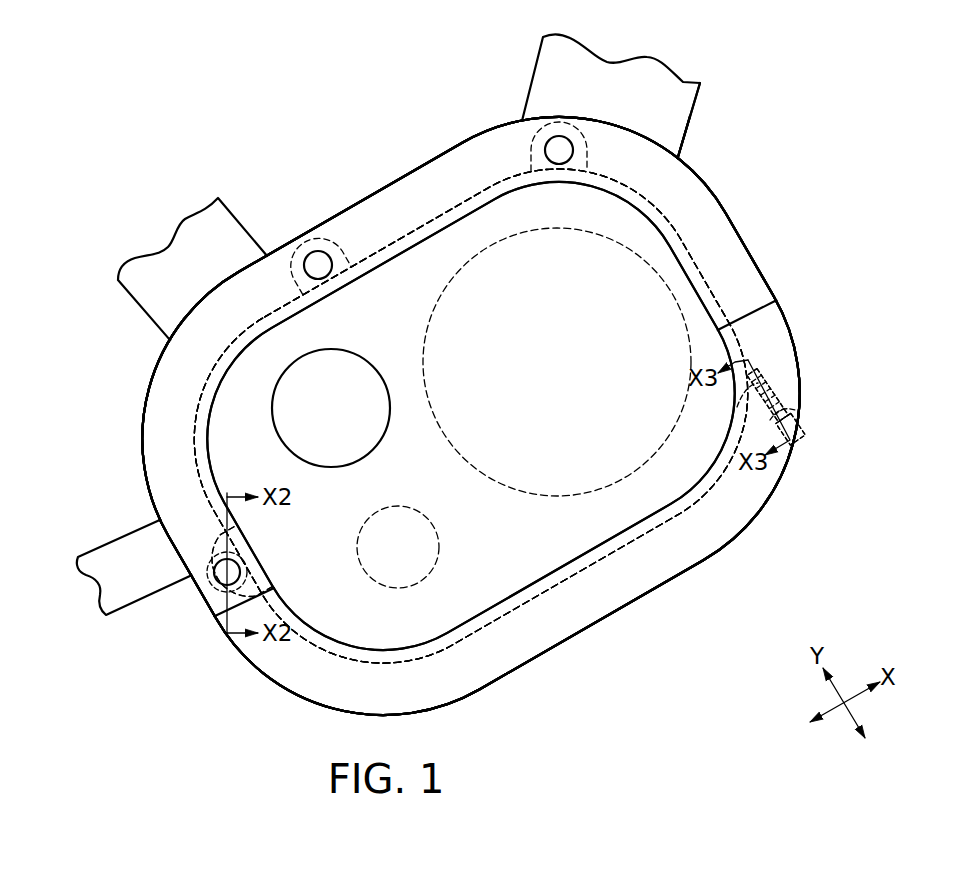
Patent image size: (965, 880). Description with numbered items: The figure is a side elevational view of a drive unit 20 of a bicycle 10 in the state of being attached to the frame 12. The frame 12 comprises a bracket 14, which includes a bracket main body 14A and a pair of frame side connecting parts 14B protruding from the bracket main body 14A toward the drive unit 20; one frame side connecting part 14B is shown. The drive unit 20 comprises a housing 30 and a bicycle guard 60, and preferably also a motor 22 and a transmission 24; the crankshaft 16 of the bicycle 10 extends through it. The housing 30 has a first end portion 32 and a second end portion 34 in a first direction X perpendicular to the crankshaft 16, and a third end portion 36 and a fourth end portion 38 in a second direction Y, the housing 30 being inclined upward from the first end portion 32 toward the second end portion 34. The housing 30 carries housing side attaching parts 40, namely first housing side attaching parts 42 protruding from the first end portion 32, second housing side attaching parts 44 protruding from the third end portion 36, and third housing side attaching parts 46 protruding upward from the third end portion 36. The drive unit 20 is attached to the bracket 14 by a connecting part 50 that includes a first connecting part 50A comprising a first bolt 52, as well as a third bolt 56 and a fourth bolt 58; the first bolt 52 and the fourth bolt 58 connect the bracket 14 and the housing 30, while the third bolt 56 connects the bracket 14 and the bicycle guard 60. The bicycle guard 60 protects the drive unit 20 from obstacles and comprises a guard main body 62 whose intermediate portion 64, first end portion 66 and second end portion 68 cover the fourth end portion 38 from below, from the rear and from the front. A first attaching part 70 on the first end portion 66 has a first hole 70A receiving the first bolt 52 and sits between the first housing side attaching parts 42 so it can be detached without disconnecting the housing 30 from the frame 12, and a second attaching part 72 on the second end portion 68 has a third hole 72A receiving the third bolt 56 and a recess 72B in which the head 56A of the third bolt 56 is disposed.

The bicycle 10 is at (890, 68).
The frame 12 is at (702, 98).
The bracket 14 is at (702, 163).
The bracket main body 14A is at (668, 145).
The frame side connecting part 14B is at (692, 190).
The crankshaft 16 is at (346, 460).
The drive unit 20 is at (178, 392).
The motor 22 is at (468, 440).
The transmission 24 is at (397, 578).
The housing 30 is at (185, 423).
The first end portion 32 is at (223, 494).
The second end portion 34 is at (668, 247).
The third end portion 36 is at (343, 288).
The fourth end portion 38 is at (500, 597).
The housing side attaching parts 40 is at (525, 58).
The first housing side attaching part 42 is at (160, 523).
The second housing side attaching part 44 is at (293, 248).
The third housing side attaching part 46 is at (540, 113).
The connecting part 50 is at (378, 158).
The first connecting part 50A is at (278, 560).
The first bolt 52 is at (236, 566).
The third bolt 56 is at (742, 428).
The head 56A is at (792, 420).
The fourth bolt 58 is at (553, 150).
The bicycle guard 60 is at (555, 672).
The guard main body 62 is at (675, 568).
The intermediate portion 64 is at (595, 634).
The first end portion 66 is at (216, 628).
The second end portion 68 is at (785, 312).
The first attaching part 70 is at (184, 578).
The first hole 70A is at (250, 572).
The second attaching part 72 is at (803, 386).
The third hole 72A is at (790, 390).
The recess 72B is at (793, 452).